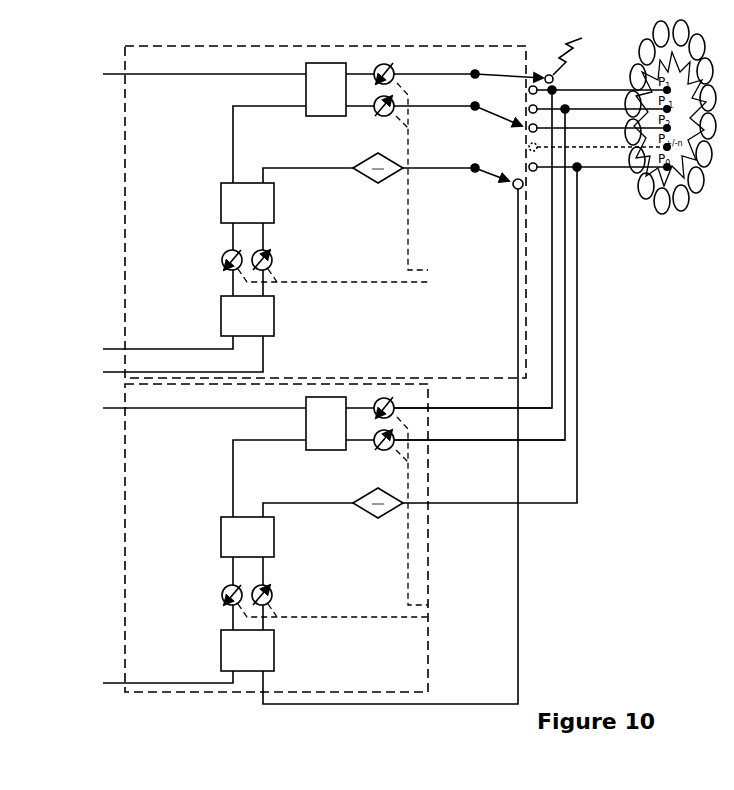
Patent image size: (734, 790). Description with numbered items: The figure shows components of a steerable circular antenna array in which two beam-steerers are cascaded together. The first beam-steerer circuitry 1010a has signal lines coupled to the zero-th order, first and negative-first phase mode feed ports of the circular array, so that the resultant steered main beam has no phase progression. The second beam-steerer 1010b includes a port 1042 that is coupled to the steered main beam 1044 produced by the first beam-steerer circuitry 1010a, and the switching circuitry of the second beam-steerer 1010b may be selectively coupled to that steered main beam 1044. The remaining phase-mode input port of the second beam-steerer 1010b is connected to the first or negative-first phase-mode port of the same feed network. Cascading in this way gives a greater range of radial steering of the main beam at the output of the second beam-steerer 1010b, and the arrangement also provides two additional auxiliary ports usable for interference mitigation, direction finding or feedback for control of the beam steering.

The second beam-steerer 1010b is at (125, 207).
The first beam-steerer circuitry 1010a is at (125, 547).
The port 1042 is at (505, 181).
The steered main beam 1044 is at (519, 580).